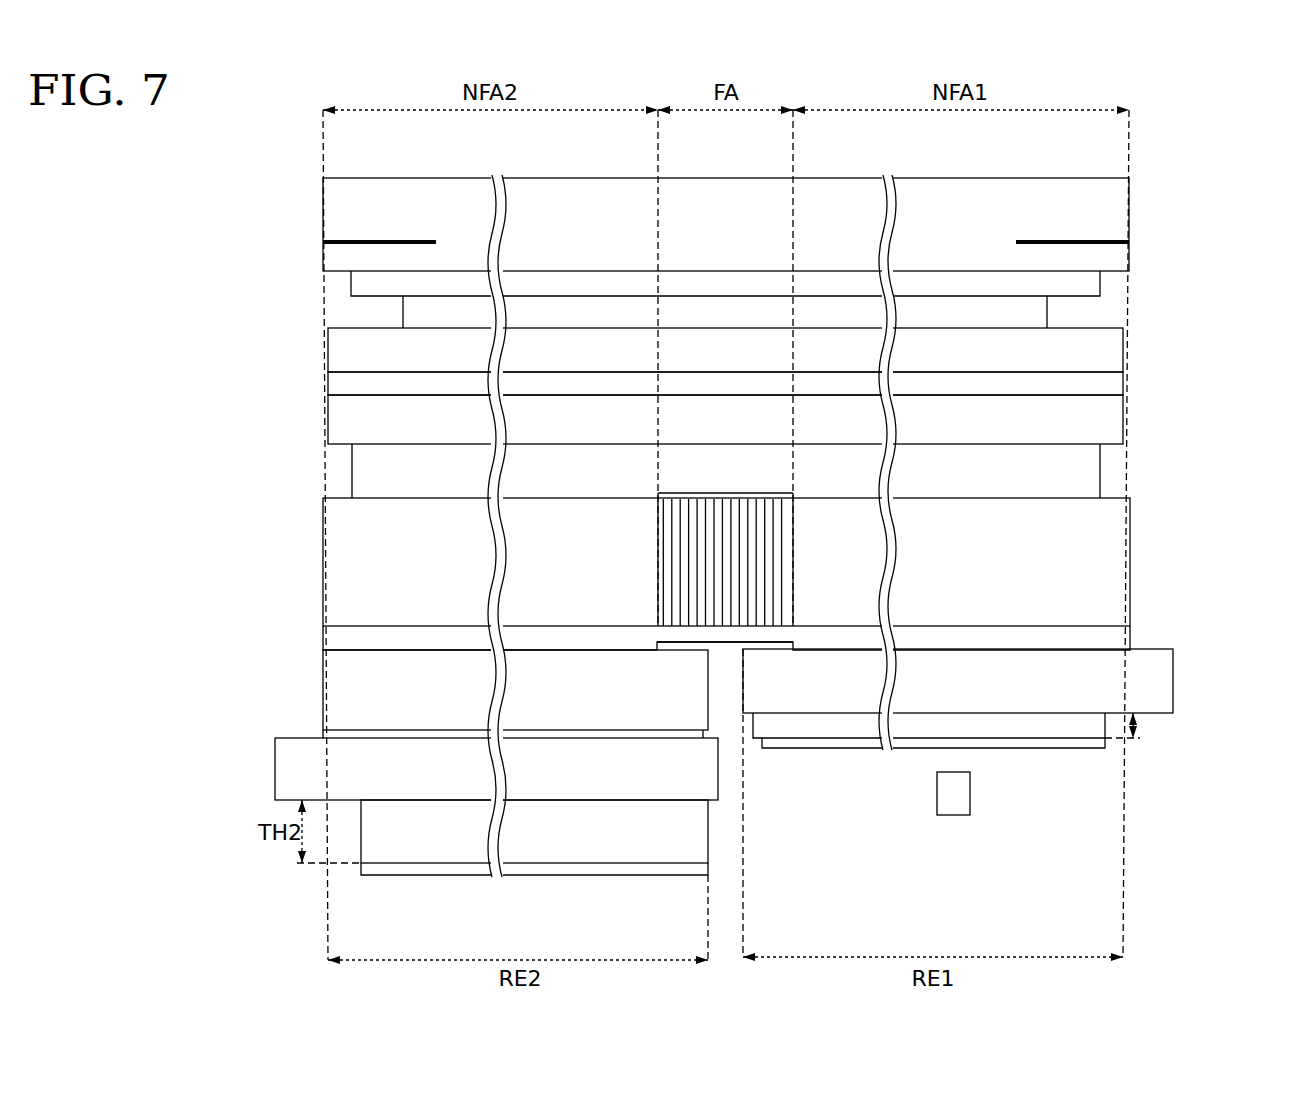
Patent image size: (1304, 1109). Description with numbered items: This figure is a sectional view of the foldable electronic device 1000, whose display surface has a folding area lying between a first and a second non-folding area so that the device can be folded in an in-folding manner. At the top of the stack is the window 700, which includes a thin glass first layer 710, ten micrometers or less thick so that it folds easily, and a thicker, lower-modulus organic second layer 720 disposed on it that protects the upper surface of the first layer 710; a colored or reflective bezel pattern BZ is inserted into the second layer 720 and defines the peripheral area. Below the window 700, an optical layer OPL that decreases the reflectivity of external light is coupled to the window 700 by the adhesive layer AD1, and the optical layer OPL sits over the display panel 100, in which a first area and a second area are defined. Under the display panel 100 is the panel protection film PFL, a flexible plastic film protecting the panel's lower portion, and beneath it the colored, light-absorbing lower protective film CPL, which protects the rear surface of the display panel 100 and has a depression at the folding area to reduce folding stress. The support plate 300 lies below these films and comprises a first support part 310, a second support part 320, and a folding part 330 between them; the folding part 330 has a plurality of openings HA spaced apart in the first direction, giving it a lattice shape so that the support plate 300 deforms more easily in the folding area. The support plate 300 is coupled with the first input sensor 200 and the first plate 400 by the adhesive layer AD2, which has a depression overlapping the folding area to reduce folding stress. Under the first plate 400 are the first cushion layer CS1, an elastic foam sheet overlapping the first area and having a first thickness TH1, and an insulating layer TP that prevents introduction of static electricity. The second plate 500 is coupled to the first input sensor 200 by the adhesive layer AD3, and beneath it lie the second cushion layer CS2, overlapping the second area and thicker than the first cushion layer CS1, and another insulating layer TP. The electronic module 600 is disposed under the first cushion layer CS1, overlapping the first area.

The electronic device 1000 is at (1202, 142).
The window 700 is at (798, 213).
The second layer 720 is at (766, 198).
The first layer 710 is at (1090, 283).
The display panel 100 is at (1112, 386).
The support plate 300 is at (725, 562).
The folding part 330 is at (670, 515).
The second support part 320 is at (333, 543).
The first support part 310 is at (803, 575).
The first input sensor 200 is at (333, 688).
The first plate 400 is at (1165, 680).
The second plate 500 is at (625, 790).
The electronic module 600 is at (953, 810).
The bezel pattern BZ is at (1041, 240).
The adhesive layer AD1 is at (1036, 316).
The adhesive layer AD2 is at (1112, 637).
The adhesive layer AD3 is at (325, 737).
The optical layer OPL is at (1112, 352).
The panel protection film PFL is at (1112, 421).
The lower protective film CPL is at (1088, 474).
The openings HA is at (709, 490).
The first cushion layer CS1 is at (1010, 733).
The second cushion layer CS2 is at (410, 857).
The insulating layer TP is at (455, 868).
The first thickness TH1 is at (1142, 725).